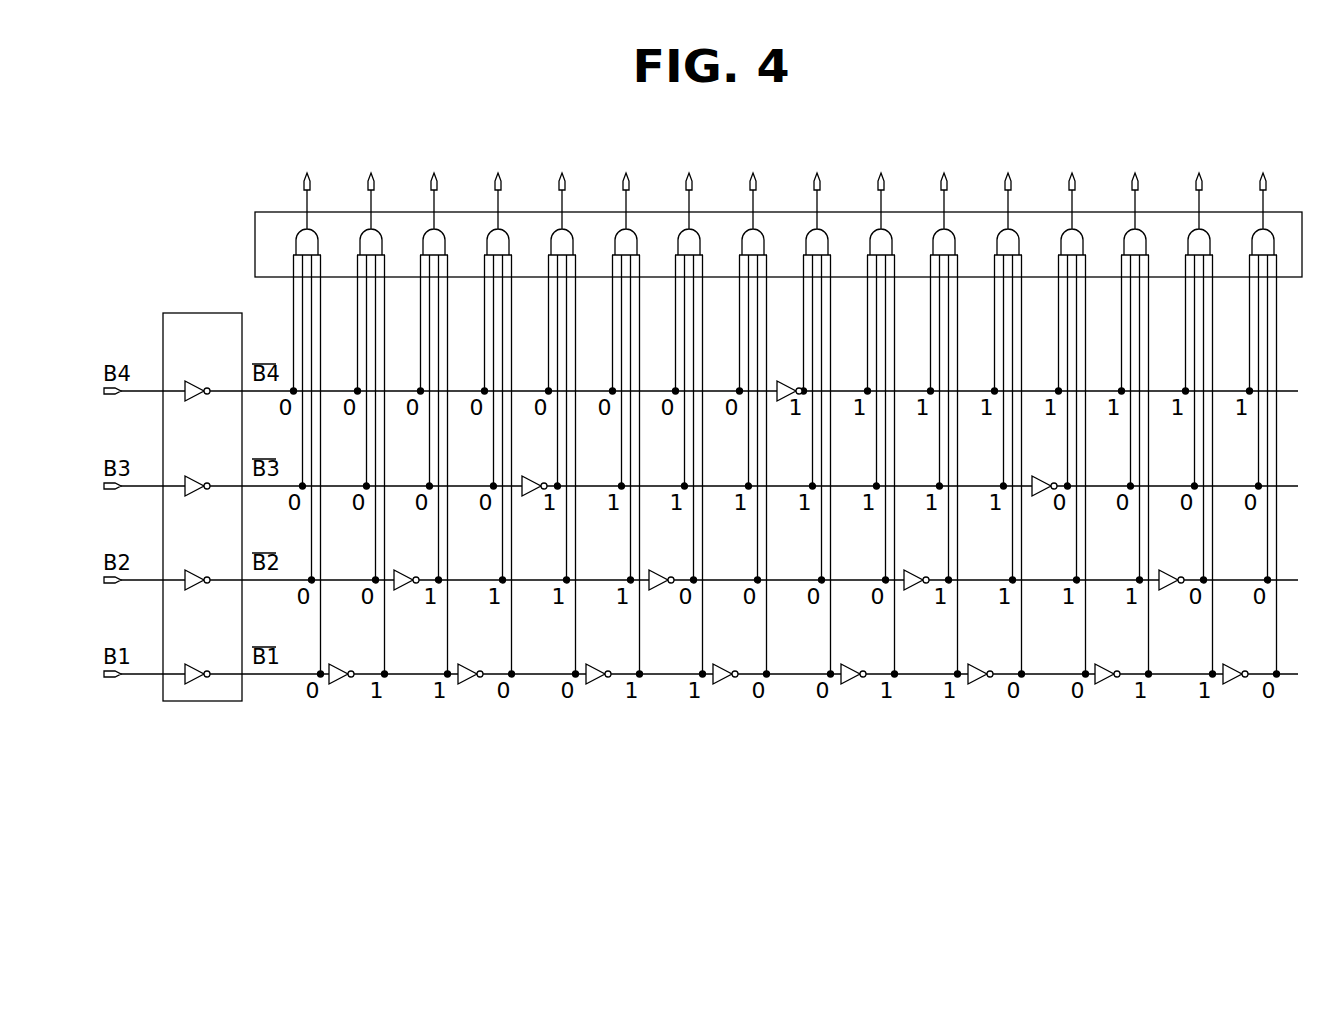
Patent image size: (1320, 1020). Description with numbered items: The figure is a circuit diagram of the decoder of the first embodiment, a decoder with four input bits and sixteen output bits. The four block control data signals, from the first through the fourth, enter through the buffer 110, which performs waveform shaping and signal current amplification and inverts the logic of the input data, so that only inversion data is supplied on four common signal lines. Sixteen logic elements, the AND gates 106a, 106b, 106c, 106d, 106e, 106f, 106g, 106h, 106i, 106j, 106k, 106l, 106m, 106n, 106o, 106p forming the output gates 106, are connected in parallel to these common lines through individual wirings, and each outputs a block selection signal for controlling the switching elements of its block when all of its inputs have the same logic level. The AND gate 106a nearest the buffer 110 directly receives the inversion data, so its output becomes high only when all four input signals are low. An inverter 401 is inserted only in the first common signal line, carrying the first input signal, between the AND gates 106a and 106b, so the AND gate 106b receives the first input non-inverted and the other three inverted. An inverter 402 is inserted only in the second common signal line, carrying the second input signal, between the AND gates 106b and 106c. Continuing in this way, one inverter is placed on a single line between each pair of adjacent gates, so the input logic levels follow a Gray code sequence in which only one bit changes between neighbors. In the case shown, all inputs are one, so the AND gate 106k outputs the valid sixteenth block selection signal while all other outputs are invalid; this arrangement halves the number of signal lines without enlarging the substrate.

The output gates 106 is at (255, 247).
The buffer 110 is at (197, 313).
The AND gate 106a is at (299, 232).
The AND gate 106b is at (363, 232).
The AND gate 106c is at (426, 232).
The AND gate 106d is at (490, 232).
The AND gate 106e is at (554, 232).
The AND gate 106f is at (618, 232).
The AND gate 106g is at (681, 232).
The AND gate 106h is at (745, 232).
The AND gate 106i is at (809, 232).
The AND gate 106j is at (873, 232).
The AND gate 106k is at (936, 232).
The AND gate 106l is at (1000, 232).
The AND gate 106m is at (1064, 232).
The AND gate 106n is at (1127, 232).
The AND gate 106o is at (1191, 232).
The AND gate 106p is at (1255, 232).
The inverter 401 is at (338, 685).
The inverter 402 is at (410, 590).